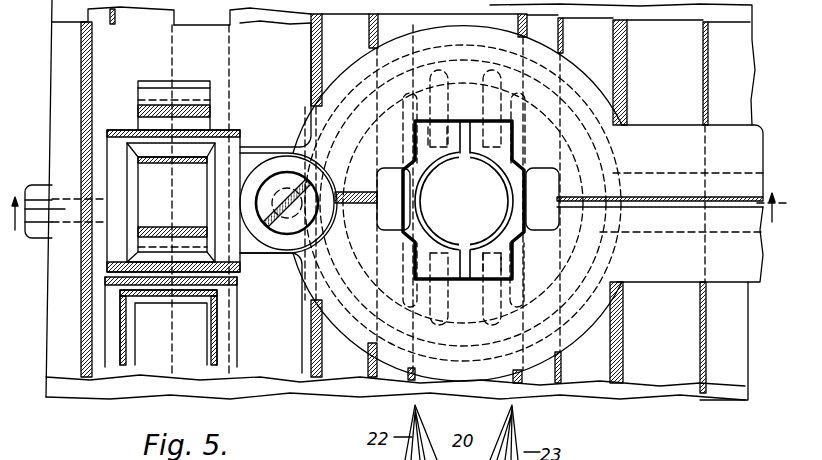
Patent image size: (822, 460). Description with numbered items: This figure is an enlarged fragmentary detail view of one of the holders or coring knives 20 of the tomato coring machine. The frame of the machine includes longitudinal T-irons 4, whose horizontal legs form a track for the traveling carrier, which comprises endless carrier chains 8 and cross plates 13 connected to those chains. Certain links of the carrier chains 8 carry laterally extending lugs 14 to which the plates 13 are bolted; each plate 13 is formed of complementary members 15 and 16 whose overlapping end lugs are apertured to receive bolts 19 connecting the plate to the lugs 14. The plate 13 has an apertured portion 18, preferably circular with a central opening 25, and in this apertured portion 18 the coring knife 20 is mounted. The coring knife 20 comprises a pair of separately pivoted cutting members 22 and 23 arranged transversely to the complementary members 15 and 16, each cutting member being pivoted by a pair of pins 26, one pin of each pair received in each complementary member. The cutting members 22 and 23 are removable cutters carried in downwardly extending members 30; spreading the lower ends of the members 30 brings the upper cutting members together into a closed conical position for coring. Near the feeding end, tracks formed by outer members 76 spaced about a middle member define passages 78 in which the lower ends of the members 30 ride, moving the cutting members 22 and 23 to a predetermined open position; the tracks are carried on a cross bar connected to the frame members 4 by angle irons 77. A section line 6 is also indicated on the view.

The longitudinal T-iron 4 is at (65, 119).
The section line 6 is at (398, 205).
The endless carrier chain 8 is at (113, 333).
The cross plate 13 is at (680, 124).
The laterally extending lug 14 is at (250, 157).
The complementary member 15 is at (681, 251).
The complementary member 16 is at (337, 367).
The apertured portion 18 is at (588, 312).
The bolt 19 is at (292, 222).
The coring knife 20 is at (464, 200).
The cutting member 22 is at (415, 238).
The cutting member 23 is at (513, 240).
The central opening 25 is at (530, 150).
The pin 26 is at (492, 74).
The downwardly extending member 30 is at (383, 183).
The outer member 76 is at (625, 52).
The angle iron 77 is at (100, 13).
The passage 78 is at (387, 32).